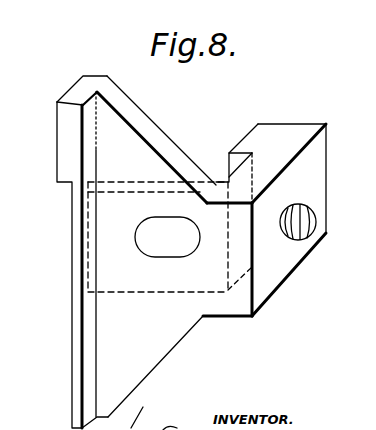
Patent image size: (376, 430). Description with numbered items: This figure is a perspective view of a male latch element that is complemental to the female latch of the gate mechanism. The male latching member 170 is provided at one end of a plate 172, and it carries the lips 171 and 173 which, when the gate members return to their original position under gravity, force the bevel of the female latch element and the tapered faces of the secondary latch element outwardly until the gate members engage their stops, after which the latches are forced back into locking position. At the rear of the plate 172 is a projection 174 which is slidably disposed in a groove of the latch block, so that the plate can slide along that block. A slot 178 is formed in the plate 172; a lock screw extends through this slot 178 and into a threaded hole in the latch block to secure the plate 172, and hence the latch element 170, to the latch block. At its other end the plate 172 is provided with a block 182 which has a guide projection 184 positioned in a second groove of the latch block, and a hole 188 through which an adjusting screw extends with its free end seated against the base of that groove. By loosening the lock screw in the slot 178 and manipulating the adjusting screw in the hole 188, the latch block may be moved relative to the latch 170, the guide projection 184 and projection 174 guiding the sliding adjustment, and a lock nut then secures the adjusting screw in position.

The male latching member 170 is at (72, 257).
The lip 171 is at (93, 114).
The plate 172 is at (217, 318).
The lip 173 is at (88, 393).
The projection 174 is at (216, 181).
The slot 178 is at (164, 257).
The block 182 is at (290, 133).
The guide projection 184 is at (250, 128).
The hole 188 is at (303, 240).